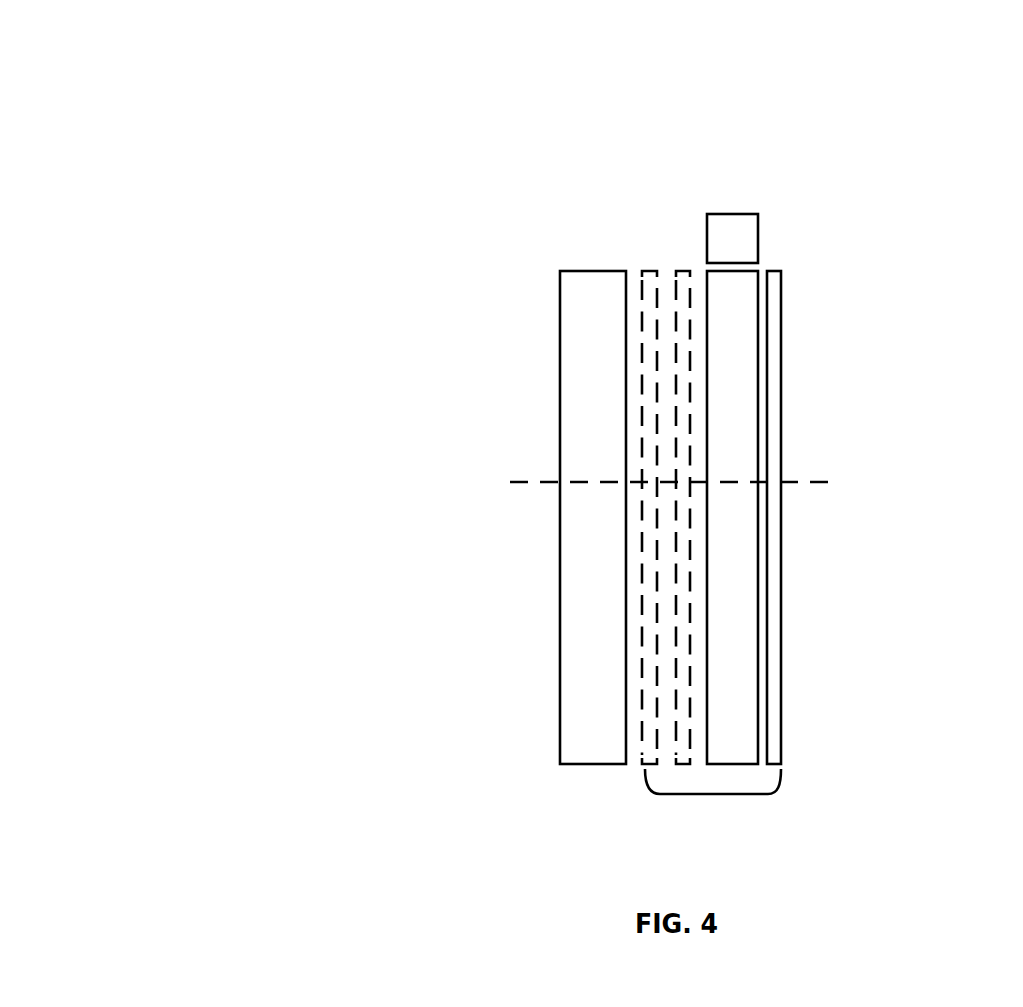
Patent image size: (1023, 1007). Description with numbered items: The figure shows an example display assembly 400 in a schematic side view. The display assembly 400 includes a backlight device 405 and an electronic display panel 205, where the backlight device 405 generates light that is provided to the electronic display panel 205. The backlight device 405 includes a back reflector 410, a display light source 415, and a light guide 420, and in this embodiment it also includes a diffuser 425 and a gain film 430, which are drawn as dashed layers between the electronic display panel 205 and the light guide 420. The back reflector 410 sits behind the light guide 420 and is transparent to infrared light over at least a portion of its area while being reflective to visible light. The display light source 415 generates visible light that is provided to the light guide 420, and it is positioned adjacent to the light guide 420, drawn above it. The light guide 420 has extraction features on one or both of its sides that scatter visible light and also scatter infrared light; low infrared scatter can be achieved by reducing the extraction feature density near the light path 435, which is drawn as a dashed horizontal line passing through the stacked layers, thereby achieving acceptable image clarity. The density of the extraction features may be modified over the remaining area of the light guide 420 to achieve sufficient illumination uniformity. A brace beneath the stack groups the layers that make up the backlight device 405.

The display assembly 400 is at (138, 24).
The electronic display panel 205 is at (595, 270).
The gain film 430 is at (650, 270).
The diffuser 425 is at (683, 270).
The display light source 415 is at (732, 213).
The light guide 420 is at (757, 270).
The back reflector 410 is at (782, 332).
The light path 435 is at (615, 488).
The backlight device 405 is at (713, 794).